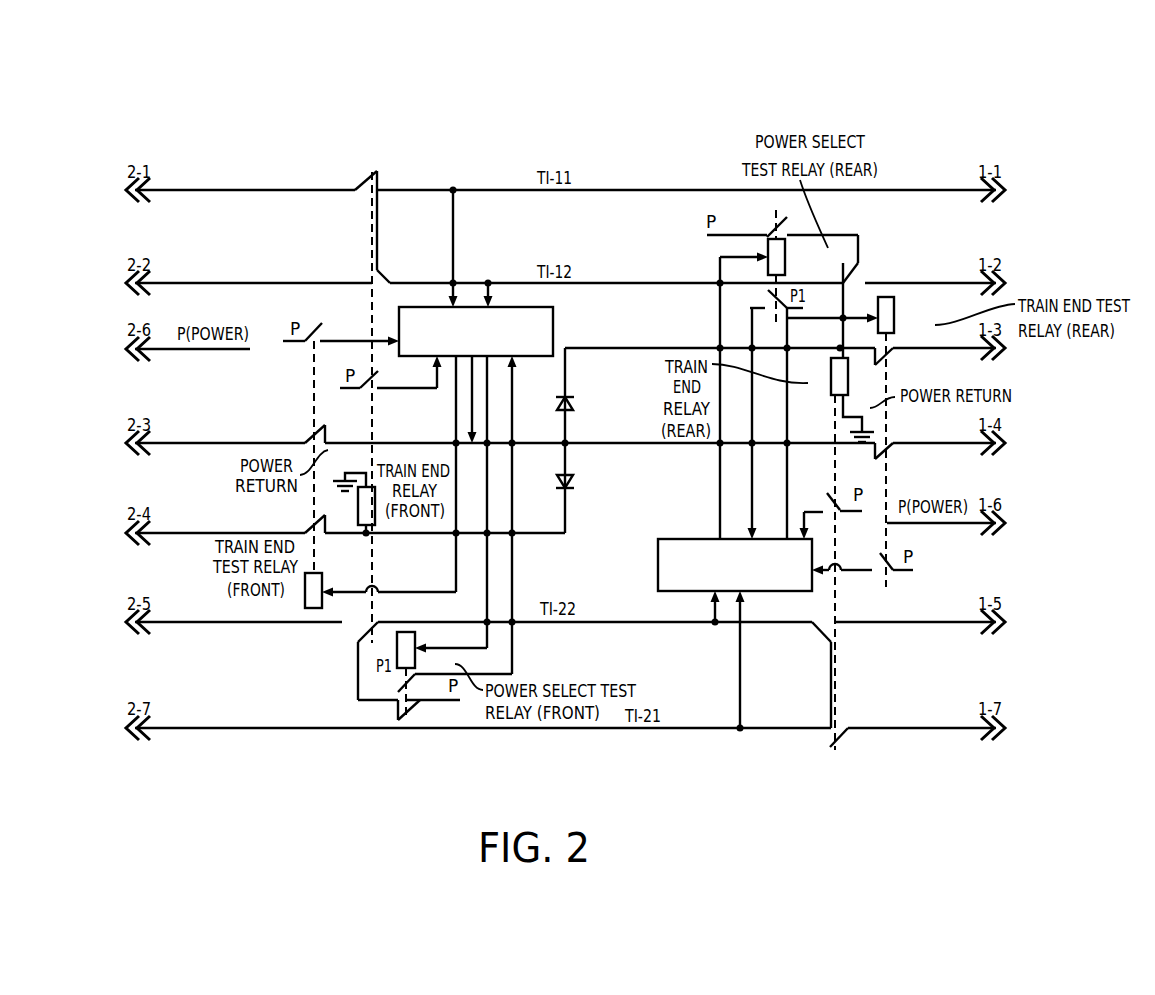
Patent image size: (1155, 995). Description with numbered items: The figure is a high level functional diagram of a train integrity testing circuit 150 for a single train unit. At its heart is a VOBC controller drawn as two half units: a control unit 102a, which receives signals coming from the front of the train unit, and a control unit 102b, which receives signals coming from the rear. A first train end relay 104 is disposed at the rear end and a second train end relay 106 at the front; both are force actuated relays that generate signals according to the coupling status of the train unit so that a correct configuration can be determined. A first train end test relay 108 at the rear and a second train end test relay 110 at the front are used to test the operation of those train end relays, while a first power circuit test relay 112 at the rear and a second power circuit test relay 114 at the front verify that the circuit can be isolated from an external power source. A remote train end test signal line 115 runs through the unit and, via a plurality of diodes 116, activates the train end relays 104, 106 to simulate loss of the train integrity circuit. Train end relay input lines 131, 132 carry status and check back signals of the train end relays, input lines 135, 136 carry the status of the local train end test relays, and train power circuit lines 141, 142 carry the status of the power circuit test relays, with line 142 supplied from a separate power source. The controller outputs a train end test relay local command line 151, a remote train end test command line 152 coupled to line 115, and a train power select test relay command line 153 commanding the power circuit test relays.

The train integrity testing circuit 150 is at (621, 88).
The control unit 102a is at (717, 565).
The control unit 102b is at (494, 331).
The first train end relay 104 is at (869, 384).
The second train end relay 106 is at (328, 498).
The first train end test relay 108 is at (900, 315).
The second train end test relay 110 is at (306, 608).
The first power circuit test relay 112 is at (782, 287).
The second power circuit test relay 114 is at (427, 646).
The remote train end test signal line 115 is at (565, 439).
The diodes 116 is at (571, 404).
The train end relay input line 131 is at (823, 512).
The train end relay input line 132 is at (388, 392).
The train end relay input line 135 is at (872, 570).
The train end relay input line 136 is at (333, 341).
The train power circuit line 141 is at (752, 505).
The train power circuit line 142 is at (513, 602).
The train end test relay local command line 151 is at (419, 591).
The remote train end test command line 152 is at (472, 416).
The train power select test relay command line 153 is at (475, 597).